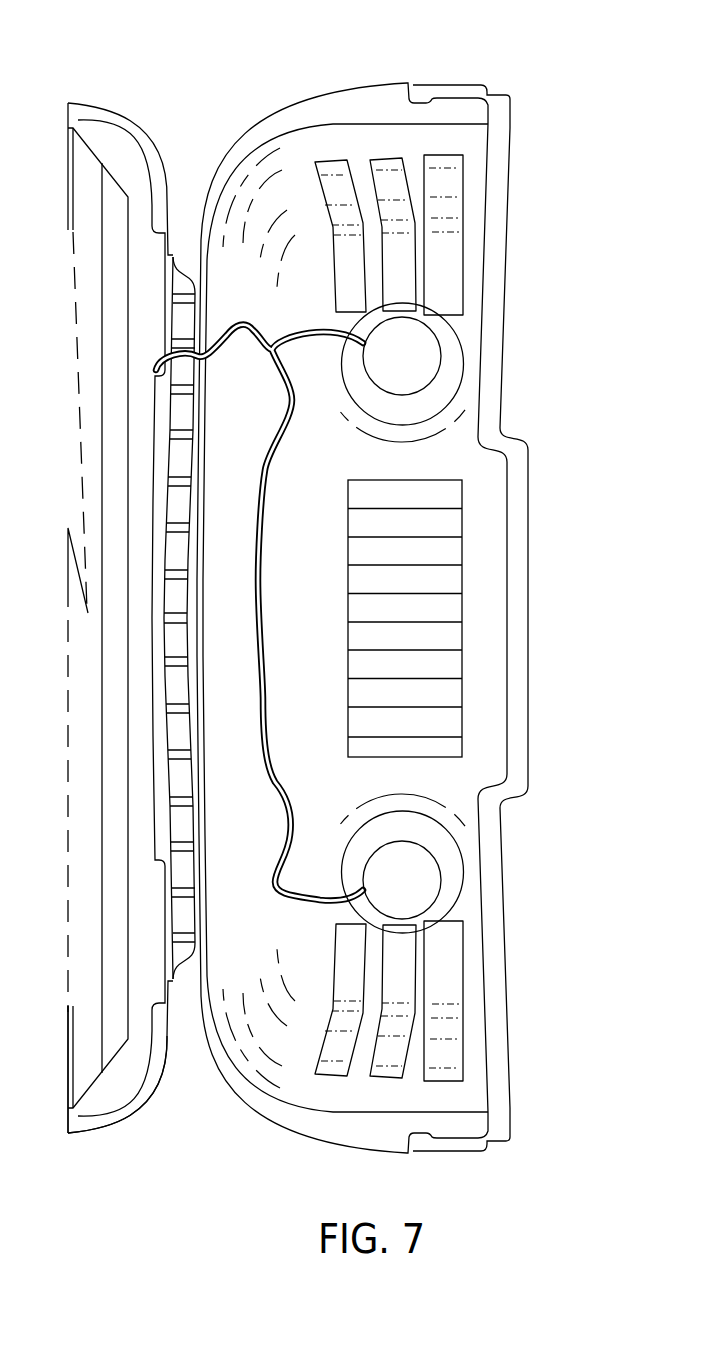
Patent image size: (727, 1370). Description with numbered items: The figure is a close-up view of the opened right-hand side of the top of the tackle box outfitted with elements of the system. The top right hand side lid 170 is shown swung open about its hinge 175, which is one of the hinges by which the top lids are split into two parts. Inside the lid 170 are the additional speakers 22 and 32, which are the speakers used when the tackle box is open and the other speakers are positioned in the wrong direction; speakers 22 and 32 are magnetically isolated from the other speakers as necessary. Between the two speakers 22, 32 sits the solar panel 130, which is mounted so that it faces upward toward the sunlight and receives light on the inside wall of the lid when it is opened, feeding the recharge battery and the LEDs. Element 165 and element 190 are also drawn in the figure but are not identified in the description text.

The speaker 22 is at (402, 355).
The speaker 32 is at (413, 886).
The solar panel 130 is at (430, 548).
The lid 165 is at (115, 147).
The top right hand side lid 170 is at (527, 795).
The hinge 175 is at (183, 913).
The lid bottom edge 190 is at (112, 1117).